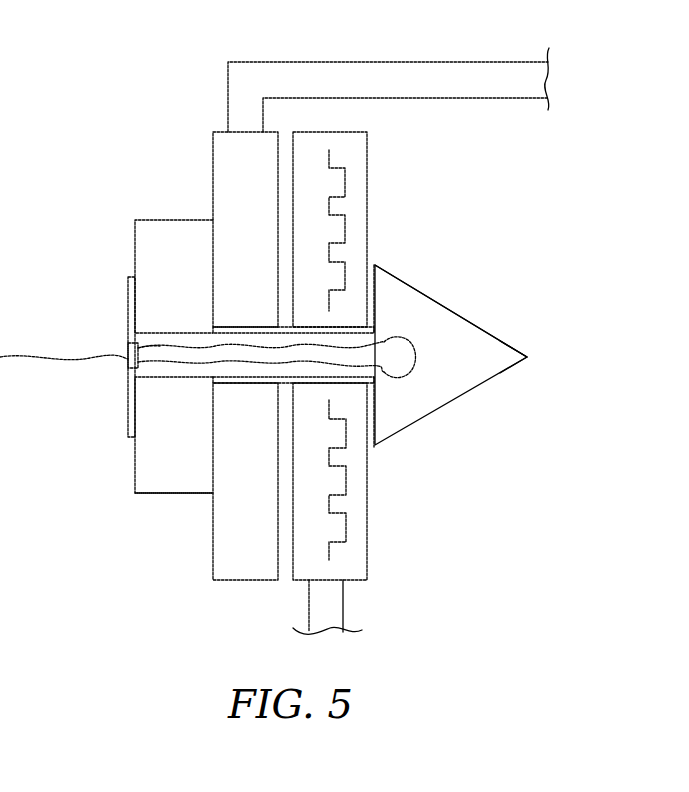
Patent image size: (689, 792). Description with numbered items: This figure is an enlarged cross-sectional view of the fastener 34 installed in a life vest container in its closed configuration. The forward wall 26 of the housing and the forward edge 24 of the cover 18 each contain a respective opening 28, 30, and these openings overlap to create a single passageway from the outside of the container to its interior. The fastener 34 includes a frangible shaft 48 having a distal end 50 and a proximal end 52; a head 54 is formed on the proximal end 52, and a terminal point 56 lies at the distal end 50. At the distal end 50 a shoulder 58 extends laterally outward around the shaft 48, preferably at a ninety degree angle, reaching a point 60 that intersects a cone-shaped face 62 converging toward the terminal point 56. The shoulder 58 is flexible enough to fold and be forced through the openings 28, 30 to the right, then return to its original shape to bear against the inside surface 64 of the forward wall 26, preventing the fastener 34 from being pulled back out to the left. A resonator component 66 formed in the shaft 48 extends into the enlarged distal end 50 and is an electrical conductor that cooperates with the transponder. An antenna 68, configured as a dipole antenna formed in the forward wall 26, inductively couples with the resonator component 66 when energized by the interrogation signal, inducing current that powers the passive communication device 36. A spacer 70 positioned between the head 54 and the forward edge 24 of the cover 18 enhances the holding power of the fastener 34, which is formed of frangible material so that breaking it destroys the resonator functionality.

The cover 18 is at (388, 62).
The forward edge 24 is at (213, 560).
The forward wall 26 is at (360, 525).
The opening 28 is at (221, 383).
The opening 30 is at (496, 349).
The fastener 34 is at (124, 290).
The communication device 36 is at (124, 348).
The frangible shaft 48 is at (159, 385).
The distal end 50 is at (375, 384).
The proximal end 52 is at (170, 332).
The head 54 is at (128, 384).
The terminal point 56 is at (535, 345).
The shoulder 58 is at (371, 262).
The point 60 is at (366, 321).
The cone-shaped face 62 is at (450, 308).
The inside surface 64 is at (367, 135).
The resonator component 66 is at (143, 348).
The antenna 68 is at (340, 554).
The spacer 70 is at (173, 498).